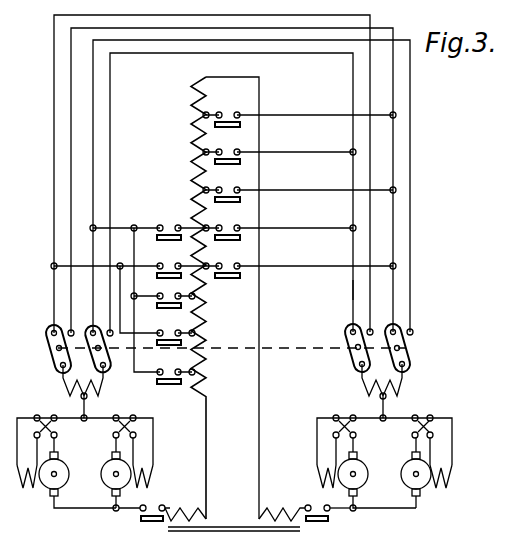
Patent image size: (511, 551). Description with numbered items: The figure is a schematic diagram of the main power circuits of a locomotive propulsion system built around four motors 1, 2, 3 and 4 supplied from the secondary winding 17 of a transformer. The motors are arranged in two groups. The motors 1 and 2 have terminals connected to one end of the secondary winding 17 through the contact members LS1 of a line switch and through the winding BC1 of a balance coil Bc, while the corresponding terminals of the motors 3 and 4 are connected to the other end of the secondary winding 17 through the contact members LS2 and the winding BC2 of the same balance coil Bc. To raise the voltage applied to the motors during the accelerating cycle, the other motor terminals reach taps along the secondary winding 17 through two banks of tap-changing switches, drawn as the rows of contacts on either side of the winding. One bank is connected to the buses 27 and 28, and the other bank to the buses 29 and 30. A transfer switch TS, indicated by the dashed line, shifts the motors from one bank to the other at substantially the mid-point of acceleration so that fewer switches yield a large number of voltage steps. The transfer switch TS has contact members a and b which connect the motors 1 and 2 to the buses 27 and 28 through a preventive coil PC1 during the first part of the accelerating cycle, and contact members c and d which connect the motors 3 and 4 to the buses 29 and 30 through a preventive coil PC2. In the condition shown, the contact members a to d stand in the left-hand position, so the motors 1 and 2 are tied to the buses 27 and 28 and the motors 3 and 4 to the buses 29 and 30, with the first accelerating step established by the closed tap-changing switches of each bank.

The secondary winding 17 is at (195, 173).
The bus 27 is at (94, 198).
The bus 28 is at (52, 268).
The bus 29 is at (396, 255).
The bus 30 is at (352, 293).
The transfer switch TS is at (302, 340).
The contact member a is at (51, 353).
The contact member b is at (106, 356).
The contact member c is at (352, 352).
The contact member d is at (405, 352).
The preventive coil PC1 is at (63, 390).
The preventive coil PC2 is at (402, 382).
The motor 1 is at (37, 506).
The motor 2 is at (95, 506).
The motor 3 is at (335, 503).
The motor 4 is at (395, 503).
The winding of balance coil BC1 is at (185, 503).
The winding of balance coil BC2 is at (282, 503).
The balance coil Bc is at (248, 507).
The contact members of switch LS LS1 is at (147, 523).
The contact members of switch LS LS2 is at (318, 523).